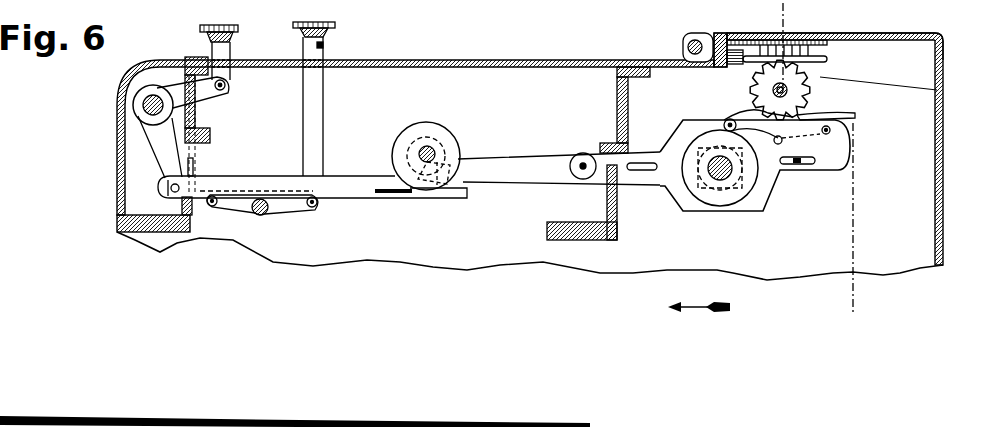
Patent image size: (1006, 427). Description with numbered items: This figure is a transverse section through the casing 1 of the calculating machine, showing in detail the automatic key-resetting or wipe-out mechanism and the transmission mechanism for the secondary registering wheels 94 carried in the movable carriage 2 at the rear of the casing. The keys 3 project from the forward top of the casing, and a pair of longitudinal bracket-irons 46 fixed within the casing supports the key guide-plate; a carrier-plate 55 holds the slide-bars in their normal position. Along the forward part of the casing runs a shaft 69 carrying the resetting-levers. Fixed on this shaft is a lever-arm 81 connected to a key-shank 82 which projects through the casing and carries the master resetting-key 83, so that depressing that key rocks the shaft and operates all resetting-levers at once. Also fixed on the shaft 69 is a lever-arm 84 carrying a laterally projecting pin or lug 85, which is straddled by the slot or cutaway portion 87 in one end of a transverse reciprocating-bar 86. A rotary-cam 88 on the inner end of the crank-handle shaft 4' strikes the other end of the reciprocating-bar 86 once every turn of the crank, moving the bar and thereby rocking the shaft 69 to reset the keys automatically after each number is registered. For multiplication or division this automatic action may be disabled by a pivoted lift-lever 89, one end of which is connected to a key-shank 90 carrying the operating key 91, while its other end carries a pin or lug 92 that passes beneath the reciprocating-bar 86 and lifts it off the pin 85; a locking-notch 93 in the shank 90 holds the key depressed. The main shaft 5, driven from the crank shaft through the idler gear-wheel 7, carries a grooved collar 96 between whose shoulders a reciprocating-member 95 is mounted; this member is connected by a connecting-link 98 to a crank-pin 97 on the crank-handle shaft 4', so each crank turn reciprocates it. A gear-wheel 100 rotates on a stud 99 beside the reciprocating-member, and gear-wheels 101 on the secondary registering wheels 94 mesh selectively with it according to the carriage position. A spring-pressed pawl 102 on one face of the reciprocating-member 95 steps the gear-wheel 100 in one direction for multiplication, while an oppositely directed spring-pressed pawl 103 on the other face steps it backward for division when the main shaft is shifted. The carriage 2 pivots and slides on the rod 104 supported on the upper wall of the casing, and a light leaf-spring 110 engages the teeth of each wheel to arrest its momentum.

The inclosing casing 1 is at (118, 168).
The movable carriage 2 is at (878, 22).
The keys 3 is at (678, 309).
The crank-handle shaft 4' is at (441, 150).
The main shaft 5 is at (728, 173).
The idler gear-wheel 7 is at (817, 160).
The bracket-irons 46 is at (197, 129).
The carrier-plate 55 is at (192, 223).
The shaft 69 is at (143, 108).
The lever-arm 81 is at (203, 97).
The key-shank 82 is at (222, 52).
The master resetting-key 83 is at (218, 26).
The lever-arm 84 is at (162, 140).
The pin or lug 85 is at (163, 186).
The reciprocating-bar 86 is at (282, 177).
The slot or cutaway portion 87 is at (167, 233).
The rotary-cam 88 is at (452, 185).
The lift-lever 89 is at (278, 208).
The key-shank 90 is at (313, 128).
The operating key 91 is at (320, 24).
The pin or lug 92 is at (213, 193).
The locking-notch 93 is at (324, 45).
The secondary registering wheels 94 is at (778, 38).
The reciprocating-member 95 is at (684, 198).
The grooved collar 96 is at (720, 194).
The crank-pin 97 is at (442, 182).
The connecting-link 98 is at (522, 158).
The stud 99 is at (772, 89).
The gear-wheel 100 is at (793, 90).
The gear-wheels 101 is at (829, 60).
The spring-pressed pawl 102 is at (748, 120).
The spring-pressed pawl 103 is at (852, 116).
The rod 104 is at (688, 50).
The leaf-spring 110 is at (726, 55).